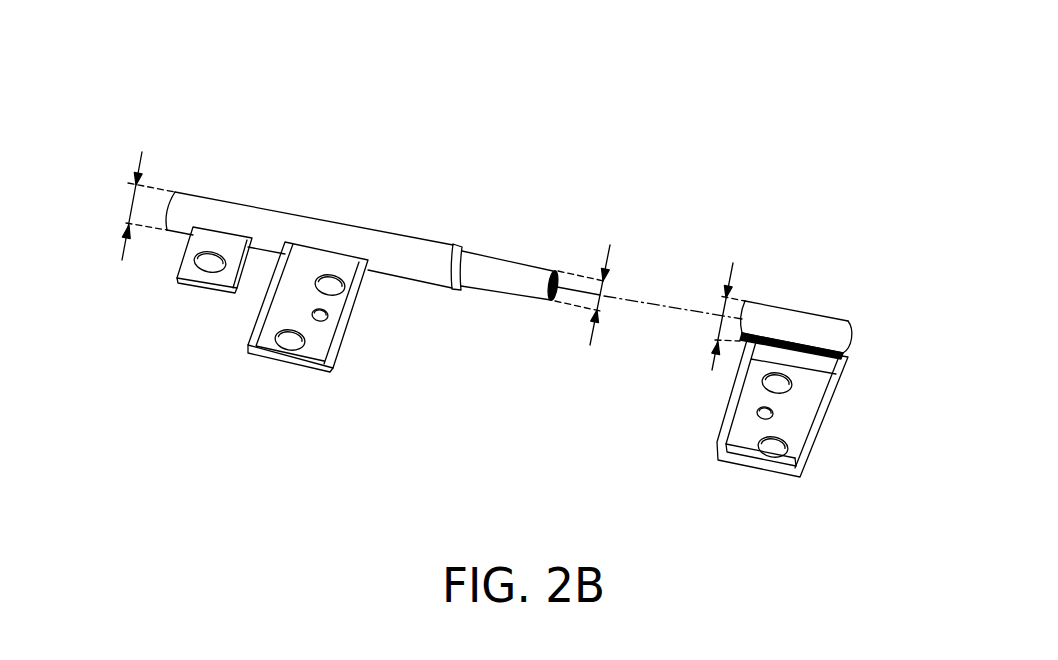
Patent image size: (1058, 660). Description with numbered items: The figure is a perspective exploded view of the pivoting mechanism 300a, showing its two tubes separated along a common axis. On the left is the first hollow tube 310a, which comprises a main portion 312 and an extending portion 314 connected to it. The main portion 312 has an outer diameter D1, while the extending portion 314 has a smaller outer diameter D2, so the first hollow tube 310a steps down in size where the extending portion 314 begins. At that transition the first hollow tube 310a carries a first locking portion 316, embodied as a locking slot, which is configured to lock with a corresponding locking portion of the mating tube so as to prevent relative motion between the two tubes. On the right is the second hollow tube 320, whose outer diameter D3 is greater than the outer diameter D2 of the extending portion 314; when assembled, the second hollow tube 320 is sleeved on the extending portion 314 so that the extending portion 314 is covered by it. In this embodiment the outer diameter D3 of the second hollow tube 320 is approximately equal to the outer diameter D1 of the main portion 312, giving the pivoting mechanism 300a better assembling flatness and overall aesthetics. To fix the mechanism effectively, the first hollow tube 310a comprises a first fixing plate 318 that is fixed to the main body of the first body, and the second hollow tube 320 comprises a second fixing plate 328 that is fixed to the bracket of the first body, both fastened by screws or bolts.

The pivoting mechanism 300a is at (817, 227).
The first hollow tube 310a is at (576, 176).
The main portion 312 is at (425, 248).
The first locking portion 316 is at (463, 257).
The extending portion 314 is at (527, 270).
The first fixing plate 318 is at (317, 350).
The second hollow tube 320 is at (775, 317).
The second fixing plate 328 is at (743, 450).
The outer diameter of the main portion D1 is at (136, 206).
The outer diameter of the extending portion D2 is at (600, 306).
The outer diameter of the second hollow tube D3 is at (722, 307).